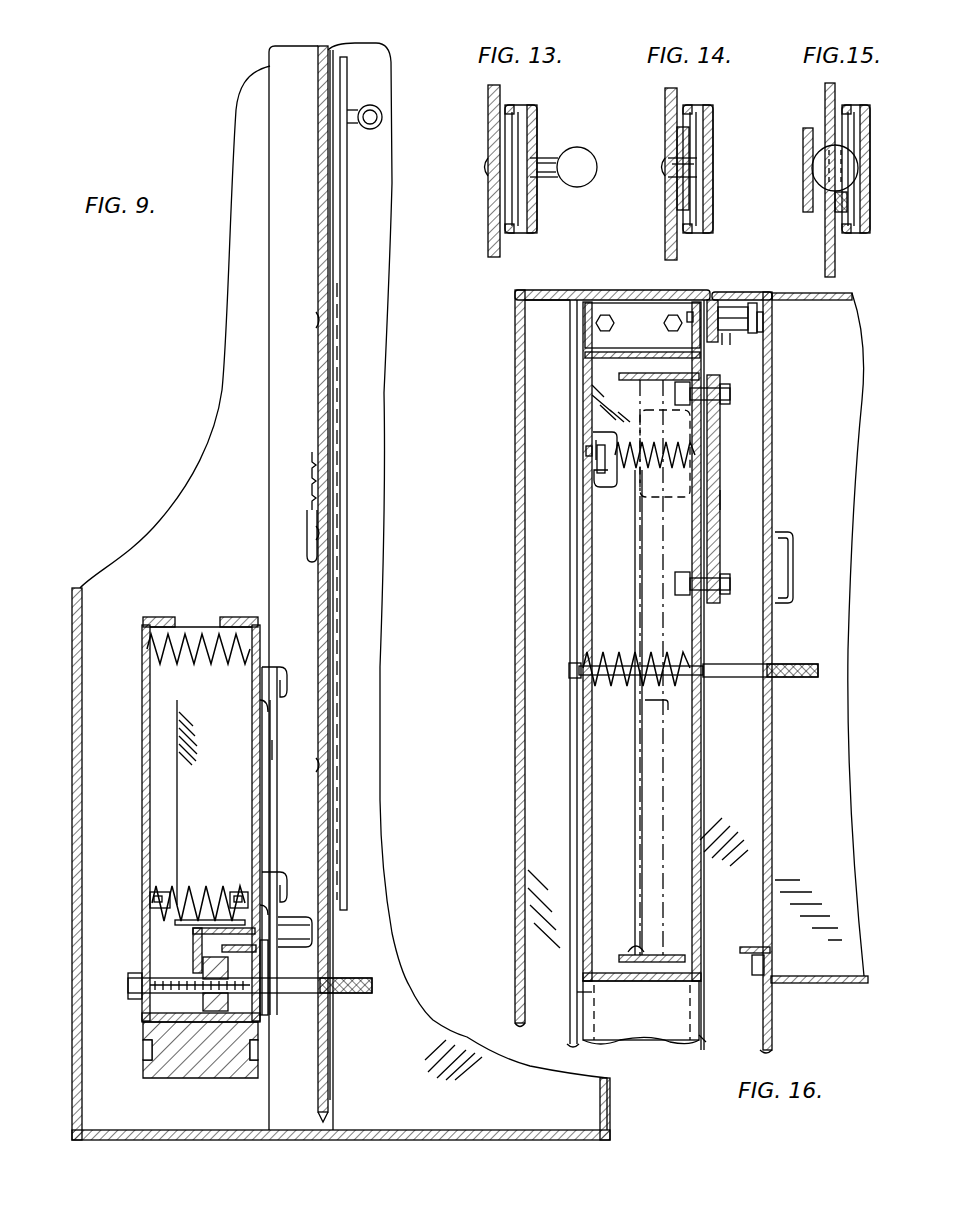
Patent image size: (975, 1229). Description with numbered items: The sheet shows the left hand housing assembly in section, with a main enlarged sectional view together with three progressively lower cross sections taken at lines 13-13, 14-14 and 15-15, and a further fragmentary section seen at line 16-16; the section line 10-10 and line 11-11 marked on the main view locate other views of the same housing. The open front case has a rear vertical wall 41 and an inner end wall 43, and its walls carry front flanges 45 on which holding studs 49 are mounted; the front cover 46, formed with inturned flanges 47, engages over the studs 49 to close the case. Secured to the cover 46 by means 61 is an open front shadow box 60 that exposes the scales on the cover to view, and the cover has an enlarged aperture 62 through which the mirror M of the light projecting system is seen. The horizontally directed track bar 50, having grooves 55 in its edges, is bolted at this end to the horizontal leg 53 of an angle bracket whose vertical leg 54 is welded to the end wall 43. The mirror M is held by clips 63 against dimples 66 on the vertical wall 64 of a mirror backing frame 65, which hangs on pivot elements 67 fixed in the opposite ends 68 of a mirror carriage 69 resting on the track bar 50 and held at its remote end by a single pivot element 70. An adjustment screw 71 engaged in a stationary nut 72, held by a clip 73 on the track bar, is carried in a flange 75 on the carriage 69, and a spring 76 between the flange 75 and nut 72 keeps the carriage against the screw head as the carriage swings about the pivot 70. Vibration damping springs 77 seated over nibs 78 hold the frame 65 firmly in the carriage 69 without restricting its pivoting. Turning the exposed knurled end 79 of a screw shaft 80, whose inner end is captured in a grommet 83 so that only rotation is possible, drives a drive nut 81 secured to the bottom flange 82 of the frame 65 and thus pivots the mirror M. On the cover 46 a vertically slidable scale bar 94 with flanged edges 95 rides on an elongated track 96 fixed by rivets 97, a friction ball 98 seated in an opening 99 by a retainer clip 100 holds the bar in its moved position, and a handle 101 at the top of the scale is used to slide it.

In FIG. 9, the section line 10- 10 is at (346, 599).
In FIG. 9, the section line 11- 11 is at (245, 831).
In FIG. 9, the section line 13- 13 is at (354, 166).
In FIG. 9, the section line 14- 14 is at (353, 364).
In FIG. 9, the section line 15- 15 is at (350, 582).
In FIG. 9, the section line 16- 16 is at (233, 851).
In FIG. 9, the rear vertical wall 41 is at (78, 996).
In FIG. 16, the rear vertical wall 41 is at (515, 458).
In FIG. 9, the inner end wall 43 is at (128, 554).
In FIG. 16, the inner end wall 43 is at (580, 293).
In FIG. 16, the front flanges 45 is at (708, 300).
In FIG. 9, the front cover 46 is at (318, 250).
In FIG. 13, the front cover 46 is at (490, 243).
In FIG. 14, the front cover 46 is at (668, 102).
In FIG. 15, the front cover 46 is at (825, 96).
In FIG. 16, the front cover 46 is at (772, 1040).
In FIG. 16, the inturned flanges 47 is at (726, 336).
In FIG. 9, the holding studs 49 is at (312, 934).
In FIG. 16, the holding studs 49 is at (745, 305).
In FIG. 9, the track bar 50 is at (200, 1080).
In FIG. 16, the track bar 50 is at (636, 1042).
In FIG. 16, the horizontal leg 53 is at (590, 336).
In FIG. 16, the vertical leg 54 is at (628, 290).
In FIG. 9, the grooves 55 is at (143, 1052).
In FIG. 16, the grooves 55 is at (582, 992).
In FIG. 9, the shadow box 60 is at (418, 1030).
In FIG. 16, the shadow box 60 is at (860, 382).
In FIG. 16, the securing means 61 is at (772, 332).
In FIG. 16, the enlarged aperture 62 is at (772, 422).
In FIG. 9, the clips 63 is at (286, 680).
In FIG. 16, the clips 63 is at (730, 392).
In FIG. 9, the vertical wall 64 is at (278, 812).
In FIG. 16, the vertical wall 64 is at (702, 802).
In FIG. 9, the mirror backing frame 65 is at (178, 766).
In FIG. 16, the mirror backing frame 65 is at (645, 838).
In FIG. 9, the dimples 66 is at (262, 712).
In FIG. 16, the dimples 66 is at (712, 408).
In FIG. 9, the pivot elements 67 is at (200, 628).
In FIG. 16, the opposite ends 68 is at (628, 352).
In FIG. 16, the mirror carriage 69 is at (572, 553).
In FIG. 16, the pivot element 70 is at (624, 952).
In FIG. 16, the adjustment screw 71 is at (722, 470).
In FIG. 16, the stationary nut 72 is at (596, 476).
In FIG. 16, the clip 73 is at (592, 495).
In FIG. 9, the flange 75 is at (262, 1010).
In FIG. 16, the spring 76 is at (632, 488).
In FIG. 9, the vibration damping springs 77 is at (210, 665).
In FIG. 16, the vibration damping springs 77 is at (606, 654).
In FIG. 9, the nibs 78 is at (236, 622).
In FIG. 9, the knurled end 79 is at (372, 983).
In FIG. 16, the knurled end 79 is at (805, 677).
In FIG. 9, the screw shaft 80 is at (160, 997).
In FIG. 16, the screw shaft 80 is at (640, 686).
In FIG. 9, the drive nut 81 is at (203, 1008).
In FIG. 16, the drive nut 81 is at (665, 712).
In FIG. 9, the bottom flange 82 is at (193, 944).
In FIG. 16, the bottom flange 82 is at (638, 752).
In FIG. 9, the grommet 83 is at (135, 978).
In FIG. 16, the grommet 83 is at (580, 680).
In FIG. 9, the scale bar 94 is at (348, 175).
In FIG. 13, the scale bar 94 is at (536, 212).
In FIG. 14, the scale bar 94 is at (713, 200).
In FIG. 15, the scale bar 94 is at (870, 166).
In FIG. 16, the scale bar 94 is at (793, 555).
In FIG. 9, the flanged edges 95 is at (340, 500).
In FIG. 13, the flanged edges 95 is at (520, 108).
In FIG. 14, the flanged edges 95 is at (698, 108).
In FIG. 15, the flanged edges 95 is at (856, 108).
In FIG. 9, the elongated track 96 is at (340, 457).
In FIG. 13, the elongated track 96 is at (520, 140).
In FIG. 14, the elongated track 96 is at (700, 148).
In FIG. 15, the elongated track 96 is at (858, 212).
In FIG. 9, the rivets 97 is at (316, 320).
In FIG. 13, the rivets 97 is at (484, 178).
In FIG. 14, the rivets 97 is at (660, 175).
In FIG. 9, the friction ball 98 is at (322, 532).
In FIG. 15, the friction ball 98 is at (812, 203).
In FIG. 15, the opening 99 is at (826, 222).
In FIG. 9, the retainer clip 100 is at (305, 522).
In FIG. 15, the retainer clip 100 is at (803, 160).
In FIG. 9, the handle 101 is at (379, 111).
In FIG. 13, the handle 101 is at (588, 158).
In FIG. 14, the handle 101 is at (682, 167).
In FIG. 9, the mirror M is at (279, 750).
In FIG. 16, the mirror M is at (722, 502).